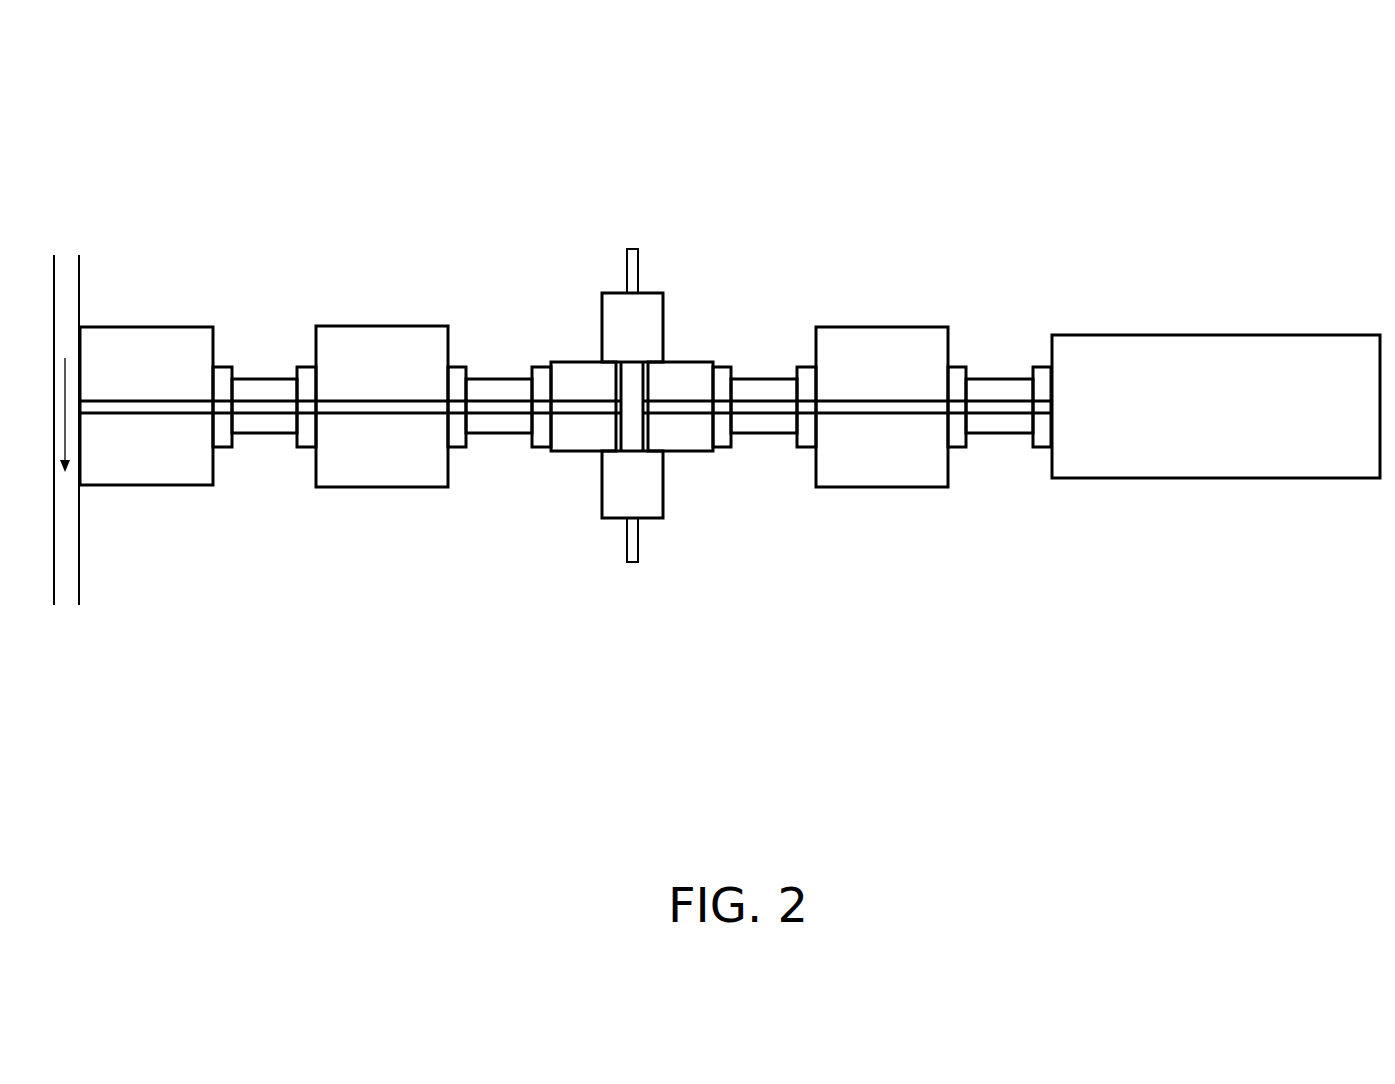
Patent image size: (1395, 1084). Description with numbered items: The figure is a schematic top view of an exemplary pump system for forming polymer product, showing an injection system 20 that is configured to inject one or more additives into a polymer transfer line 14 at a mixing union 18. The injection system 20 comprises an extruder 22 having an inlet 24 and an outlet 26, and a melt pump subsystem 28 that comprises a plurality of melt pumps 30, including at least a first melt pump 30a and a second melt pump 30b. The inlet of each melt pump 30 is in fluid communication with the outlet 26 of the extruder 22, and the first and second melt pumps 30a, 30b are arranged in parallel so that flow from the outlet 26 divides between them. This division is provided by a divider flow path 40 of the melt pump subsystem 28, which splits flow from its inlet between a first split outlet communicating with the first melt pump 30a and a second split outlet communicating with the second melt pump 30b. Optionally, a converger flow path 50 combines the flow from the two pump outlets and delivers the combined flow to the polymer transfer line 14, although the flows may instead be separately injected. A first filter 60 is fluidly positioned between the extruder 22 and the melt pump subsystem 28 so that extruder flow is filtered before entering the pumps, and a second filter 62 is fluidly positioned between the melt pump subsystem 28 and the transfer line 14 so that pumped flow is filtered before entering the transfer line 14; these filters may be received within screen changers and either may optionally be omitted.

The transfer line 14 is at (68, 545).
The mixing union 18 is at (165, 460).
The injection system 20 is at (717, 383).
The extruder 22 is at (1216, 372).
The inlet 24 is at (1335, 376).
The outlet 26 is at (1045, 408).
The melt pump subsystem 28 is at (658, 393).
The melt pump 30 is at (691, 405).
The first melt pump 30a is at (640, 329).
The second melt pump 30b is at (652, 505).
The divider flow path 40 is at (694, 427).
The converger flow path 50 is at (572, 437).
The first filter 60 is at (874, 345).
The second filter 62 is at (355, 350).